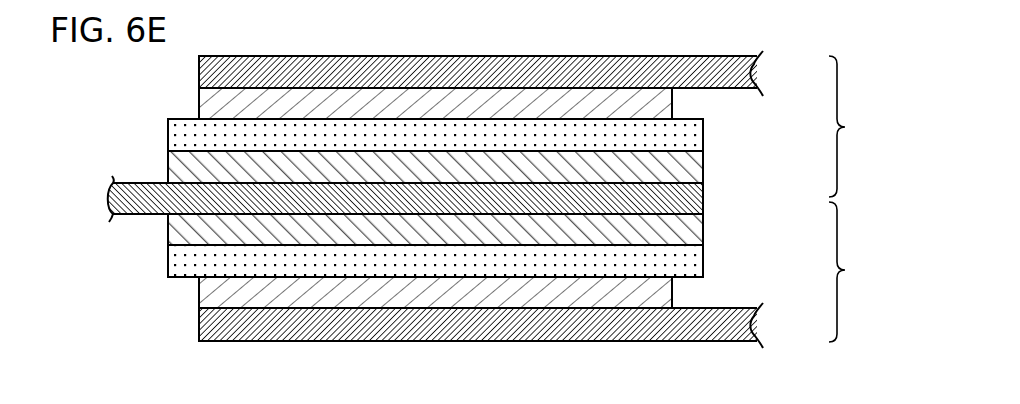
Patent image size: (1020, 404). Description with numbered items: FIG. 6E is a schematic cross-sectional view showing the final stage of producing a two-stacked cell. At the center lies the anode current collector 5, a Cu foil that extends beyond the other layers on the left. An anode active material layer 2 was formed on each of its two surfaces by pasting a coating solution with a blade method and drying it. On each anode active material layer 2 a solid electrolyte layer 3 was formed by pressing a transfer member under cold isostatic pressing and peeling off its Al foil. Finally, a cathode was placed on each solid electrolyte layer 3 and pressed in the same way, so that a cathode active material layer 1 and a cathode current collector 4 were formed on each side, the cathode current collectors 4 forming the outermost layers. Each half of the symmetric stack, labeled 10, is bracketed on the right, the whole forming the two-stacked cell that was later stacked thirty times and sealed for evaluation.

The cathode active material layer 1 is at (657, 102).
The anode active material layer 2 is at (688, 167).
The solid electrolyte layer 3 is at (688, 135).
The cathode current collector 4 is at (754, 73).
The anode current collector 5 is at (697, 197).
The laminate unit 10 is at (856, 199).